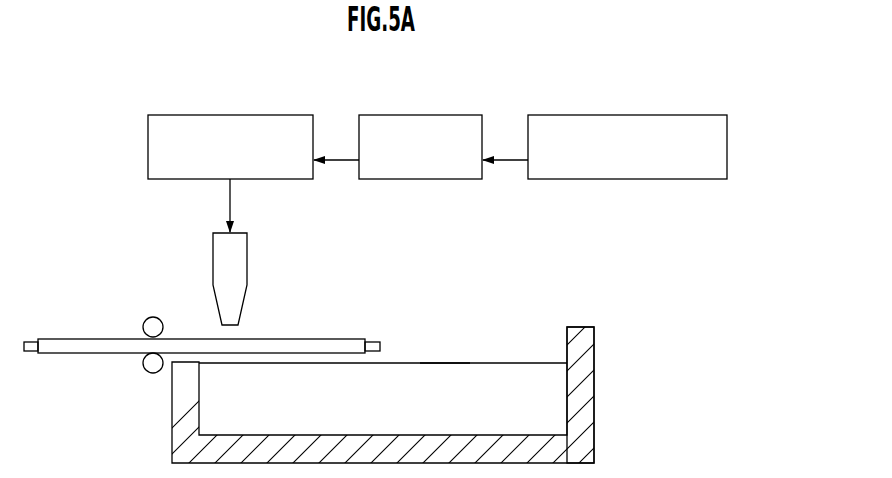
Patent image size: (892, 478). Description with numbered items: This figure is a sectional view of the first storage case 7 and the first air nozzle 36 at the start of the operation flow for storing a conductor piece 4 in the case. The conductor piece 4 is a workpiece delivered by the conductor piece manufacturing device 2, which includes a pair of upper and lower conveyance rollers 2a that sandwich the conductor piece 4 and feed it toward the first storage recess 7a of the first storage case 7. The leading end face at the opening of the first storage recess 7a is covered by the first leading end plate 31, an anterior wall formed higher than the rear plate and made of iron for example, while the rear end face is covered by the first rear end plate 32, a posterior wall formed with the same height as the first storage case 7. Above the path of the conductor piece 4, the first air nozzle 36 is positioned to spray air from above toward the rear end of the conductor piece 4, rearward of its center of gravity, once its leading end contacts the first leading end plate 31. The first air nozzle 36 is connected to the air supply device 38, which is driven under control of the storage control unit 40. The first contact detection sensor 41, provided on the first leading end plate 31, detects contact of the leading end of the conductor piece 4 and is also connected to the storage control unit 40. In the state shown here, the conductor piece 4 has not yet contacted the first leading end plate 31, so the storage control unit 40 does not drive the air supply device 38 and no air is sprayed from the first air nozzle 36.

The conductor piece manufacturing device 2 is at (128, 314).
The conveyance rollers 2a is at (158, 327).
The conductor piece 4 is at (303, 338).
The first storage case 7 is at (502, 352).
The first storage recess 7a is at (437, 372).
The first leading end plate 31 is at (578, 330).
The first rear end plate 32 is at (172, 410).
The first air nozzle 36 is at (213, 262).
The air supply device 38 is at (226, 114).
The storage control unit 40 is at (418, 114).
The first contact detection sensor 41 is at (622, 114).